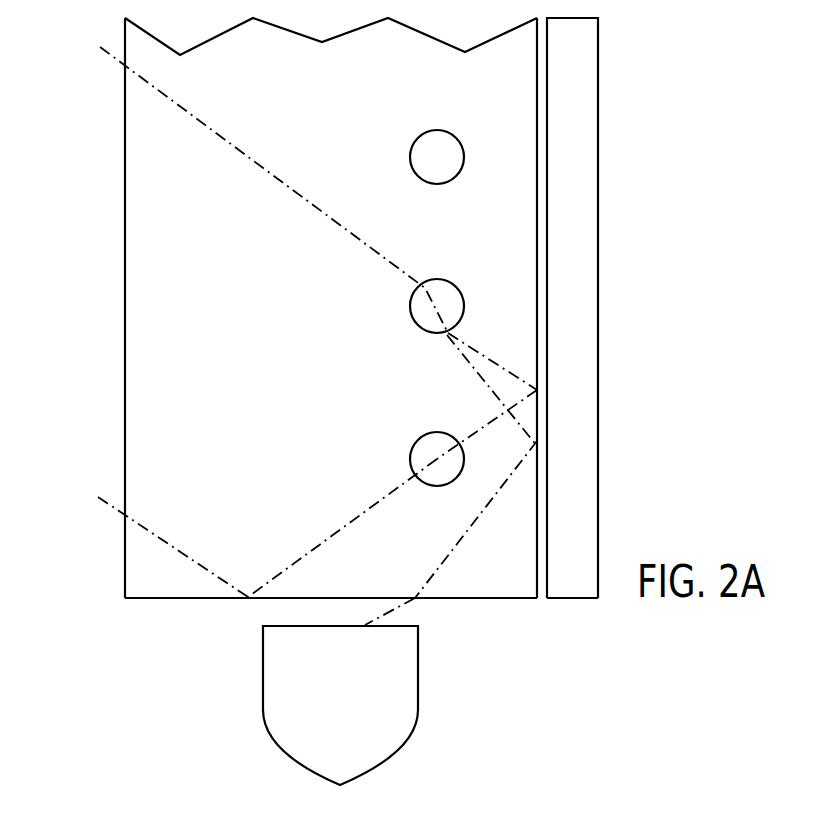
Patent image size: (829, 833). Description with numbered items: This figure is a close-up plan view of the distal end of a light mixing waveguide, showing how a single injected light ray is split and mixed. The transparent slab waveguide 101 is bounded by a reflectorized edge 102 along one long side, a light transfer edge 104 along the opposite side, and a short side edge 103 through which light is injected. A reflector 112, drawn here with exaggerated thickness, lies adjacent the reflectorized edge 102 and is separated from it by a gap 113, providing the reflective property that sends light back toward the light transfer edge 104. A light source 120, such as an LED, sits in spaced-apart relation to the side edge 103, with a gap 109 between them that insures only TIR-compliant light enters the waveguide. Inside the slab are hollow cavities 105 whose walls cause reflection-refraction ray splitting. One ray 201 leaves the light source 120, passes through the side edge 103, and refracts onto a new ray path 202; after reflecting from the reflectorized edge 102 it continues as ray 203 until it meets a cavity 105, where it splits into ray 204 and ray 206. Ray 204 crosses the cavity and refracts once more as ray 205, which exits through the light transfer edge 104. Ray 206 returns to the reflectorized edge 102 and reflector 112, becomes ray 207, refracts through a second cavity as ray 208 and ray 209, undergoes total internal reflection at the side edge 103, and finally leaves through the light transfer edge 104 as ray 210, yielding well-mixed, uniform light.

The slab waveguide 101 is at (339, 119).
The reflectorized edge 102 is at (537, 168).
The side edge 103 is at (490, 600).
The light transfer edge 104 is at (123, 567).
The cavity 105 is at (463, 155).
The gap 109 is at (272, 613).
The reflector 112 is at (575, 255).
The gap 113 is at (540, 600).
The light source 120 is at (408, 730).
The ray 201 is at (385, 611).
The ray path 202 is at (476, 519).
The ray 203 is at (489, 390).
The ray 204 is at (437, 306).
The ray 205 is at (274, 190).
The ray 206 is at (492, 361).
The ray 207 is at (487, 424).
The ray 208 is at (437, 459).
The ray 209 is at (342, 528).
The ray 210 is at (173, 547).